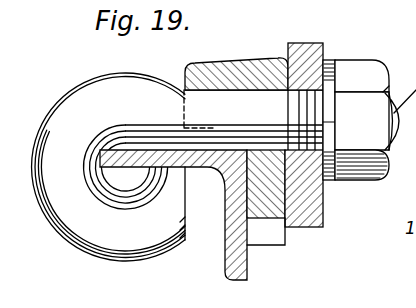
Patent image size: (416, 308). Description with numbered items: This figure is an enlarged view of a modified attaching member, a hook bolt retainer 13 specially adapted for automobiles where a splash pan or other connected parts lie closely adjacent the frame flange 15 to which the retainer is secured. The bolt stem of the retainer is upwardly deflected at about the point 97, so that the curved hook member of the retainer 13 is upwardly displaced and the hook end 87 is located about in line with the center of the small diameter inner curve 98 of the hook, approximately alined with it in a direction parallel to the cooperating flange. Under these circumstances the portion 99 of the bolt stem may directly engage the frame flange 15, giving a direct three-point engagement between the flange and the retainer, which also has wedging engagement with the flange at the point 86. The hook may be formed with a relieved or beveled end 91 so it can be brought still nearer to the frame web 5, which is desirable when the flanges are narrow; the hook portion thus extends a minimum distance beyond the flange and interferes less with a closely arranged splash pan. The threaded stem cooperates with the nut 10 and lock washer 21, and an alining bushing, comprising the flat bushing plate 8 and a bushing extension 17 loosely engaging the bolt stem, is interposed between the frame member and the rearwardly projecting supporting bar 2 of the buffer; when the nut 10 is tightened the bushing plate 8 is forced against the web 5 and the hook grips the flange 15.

The rearwardly projecting supporting bar 2 is at (307, 53).
The web 5 is at (242, 257).
The bushing plate 8 is at (286, 245).
The nut 10 is at (365, 173).
The retainer 13 is at (90, 235).
The frame flange 15 is at (117, 167).
The bushing extension 17 is at (258, 58).
The lock washer 21 is at (329, 182).
The edge of the flange 86 is at (88, 148).
The hook end 87 is at (193, 165).
The relieved or beveled end 91 is at (186, 222).
The point of deflection 97 is at (175, 112).
The small diameter inner curve 98 is at (135, 126).
The portion of the bolt stem 99 is at (213, 147).